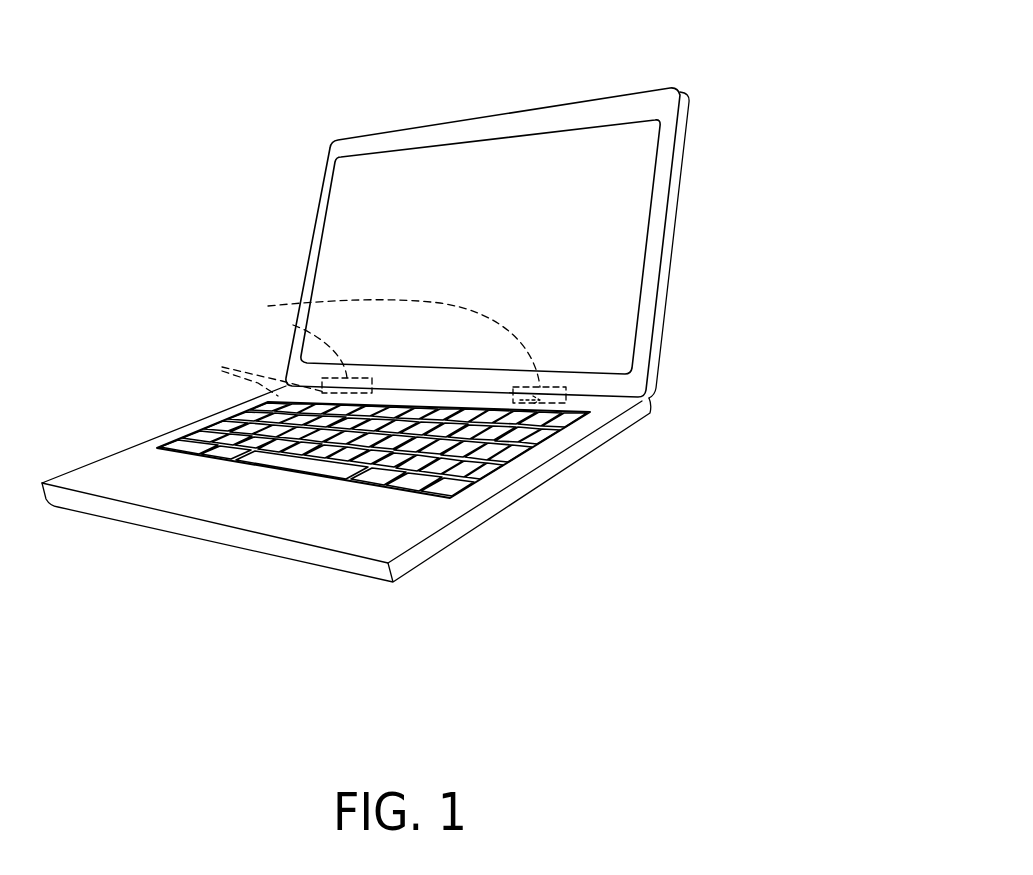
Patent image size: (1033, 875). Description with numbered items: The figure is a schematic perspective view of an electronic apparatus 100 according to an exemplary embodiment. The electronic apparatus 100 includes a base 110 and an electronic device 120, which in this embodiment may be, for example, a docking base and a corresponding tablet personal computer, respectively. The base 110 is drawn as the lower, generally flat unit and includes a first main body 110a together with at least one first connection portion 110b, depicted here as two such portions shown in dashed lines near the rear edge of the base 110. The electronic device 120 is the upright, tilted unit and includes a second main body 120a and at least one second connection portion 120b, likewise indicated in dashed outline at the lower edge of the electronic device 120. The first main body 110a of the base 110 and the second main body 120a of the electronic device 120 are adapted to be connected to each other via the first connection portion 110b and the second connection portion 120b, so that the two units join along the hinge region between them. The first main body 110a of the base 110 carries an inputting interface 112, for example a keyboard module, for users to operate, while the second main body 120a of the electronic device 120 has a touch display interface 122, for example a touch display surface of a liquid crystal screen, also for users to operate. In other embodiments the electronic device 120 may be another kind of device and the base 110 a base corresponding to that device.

The electronic apparatus 100 is at (780, 45).
The base 110 is at (375, 463).
The first main body 110a is at (603, 435).
The first connection portion 110b is at (240, 371).
The inputting interface 112 is at (180, 440).
The electronic device 120 is at (511, 246).
The second main body 120a is at (663, 155).
The second connection portion 120b is at (293, 325).
The touch display interface 122 is at (345, 228).